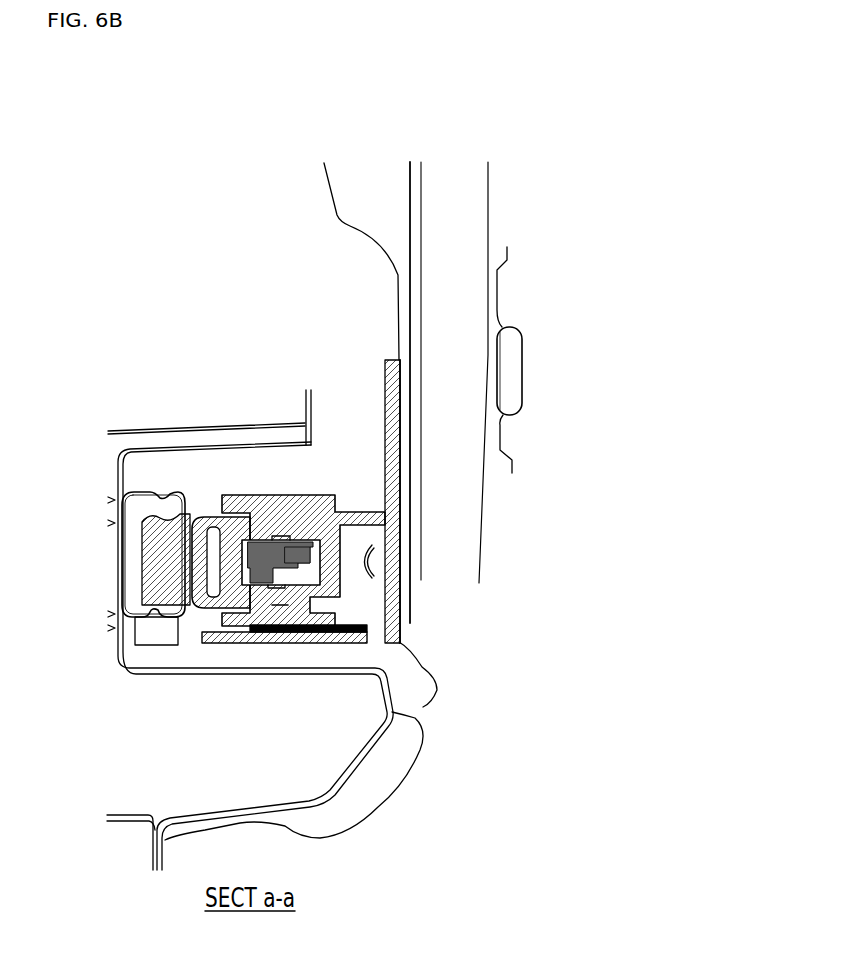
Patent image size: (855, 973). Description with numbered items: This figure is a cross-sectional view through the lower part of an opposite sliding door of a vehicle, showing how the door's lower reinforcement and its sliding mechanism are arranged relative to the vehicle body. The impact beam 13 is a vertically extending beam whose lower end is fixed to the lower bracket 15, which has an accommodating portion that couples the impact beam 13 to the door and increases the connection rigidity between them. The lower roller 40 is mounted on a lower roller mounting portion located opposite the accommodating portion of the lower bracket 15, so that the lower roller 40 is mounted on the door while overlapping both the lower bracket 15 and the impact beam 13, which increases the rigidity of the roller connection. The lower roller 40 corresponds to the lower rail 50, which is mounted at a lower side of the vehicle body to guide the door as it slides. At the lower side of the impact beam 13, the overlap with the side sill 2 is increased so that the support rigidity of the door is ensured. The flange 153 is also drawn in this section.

The side sill 2 is at (120, 645).
The impact beam 13 is at (455, 192).
The lower bracket 15 is at (408, 310).
The panel flange 153 is at (410, 465).
The lower roller 40 is at (240, 644).
The lower rail 50 is at (138, 487).